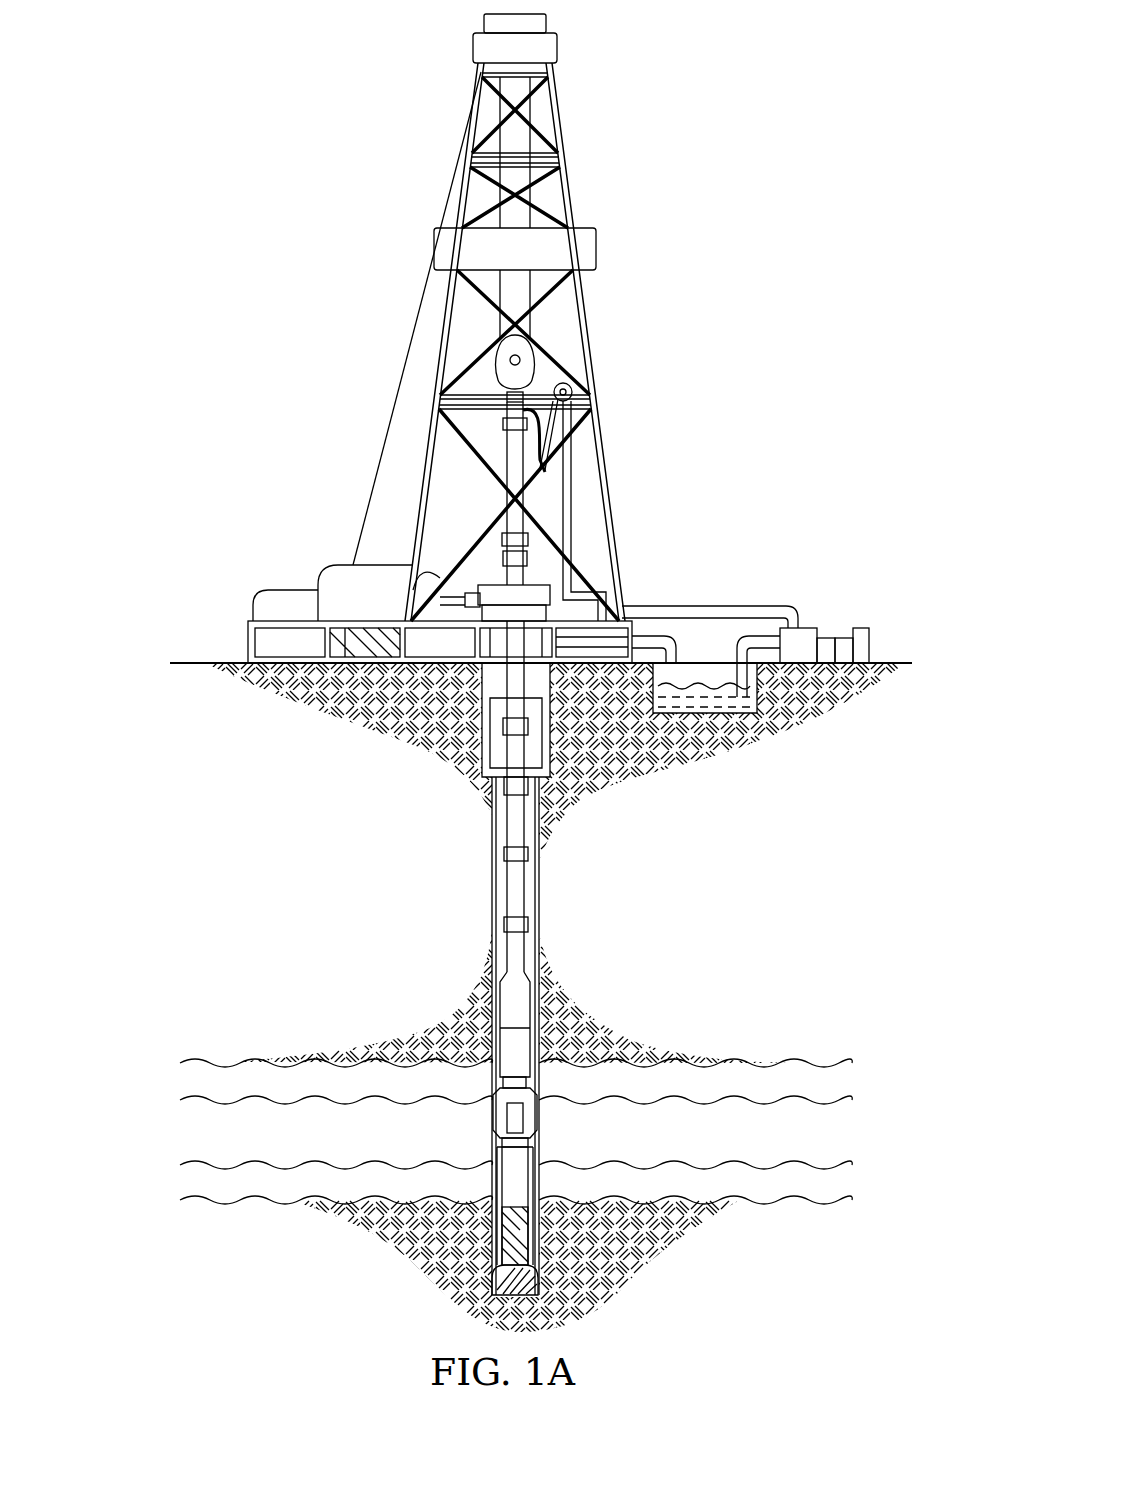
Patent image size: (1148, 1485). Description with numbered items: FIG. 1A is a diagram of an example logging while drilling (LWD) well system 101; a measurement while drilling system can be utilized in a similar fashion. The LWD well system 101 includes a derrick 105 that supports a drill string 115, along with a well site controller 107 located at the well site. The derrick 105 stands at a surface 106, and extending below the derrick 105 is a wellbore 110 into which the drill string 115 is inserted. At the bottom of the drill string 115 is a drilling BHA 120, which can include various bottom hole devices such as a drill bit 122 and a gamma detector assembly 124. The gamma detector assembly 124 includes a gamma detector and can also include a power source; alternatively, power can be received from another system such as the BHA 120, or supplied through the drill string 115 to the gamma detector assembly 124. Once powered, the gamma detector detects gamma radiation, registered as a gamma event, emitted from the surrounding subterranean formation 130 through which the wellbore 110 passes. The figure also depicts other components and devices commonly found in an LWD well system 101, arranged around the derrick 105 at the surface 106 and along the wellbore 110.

The LWD well system 101 is at (286, 75).
The derrick 105 is at (592, 333).
The surface 106 is at (213, 663).
The well site controller 107 is at (383, 630).
The wellbore 110 is at (490, 898).
The drill string 115 is at (506, 882).
The drilling BHA 120 is at (528, 1193).
The drill bit 122 is at (495, 1278).
The gamma detector assembly 124 is at (530, 1215).
The subterranean formation 130 is at (172, 1081).